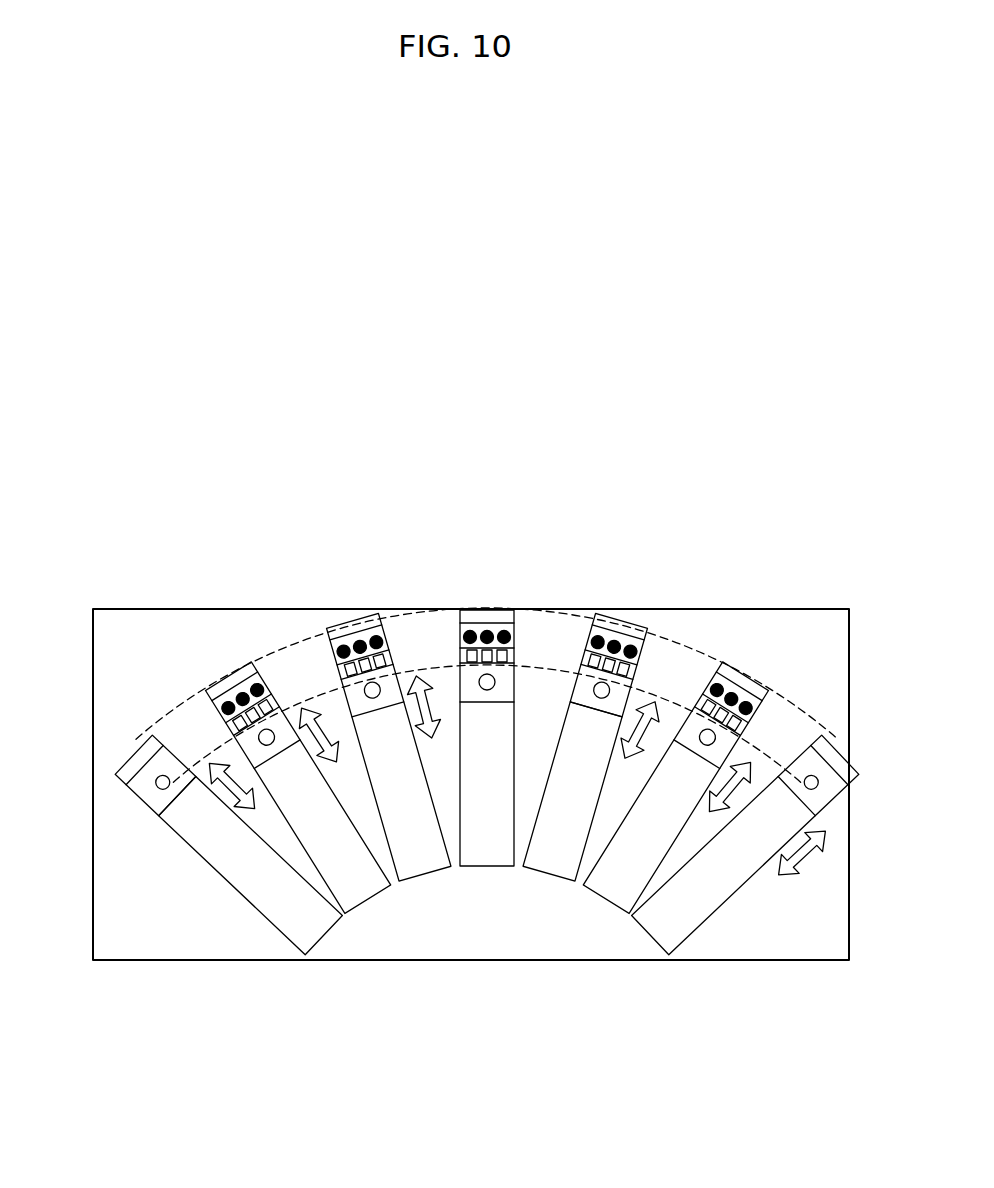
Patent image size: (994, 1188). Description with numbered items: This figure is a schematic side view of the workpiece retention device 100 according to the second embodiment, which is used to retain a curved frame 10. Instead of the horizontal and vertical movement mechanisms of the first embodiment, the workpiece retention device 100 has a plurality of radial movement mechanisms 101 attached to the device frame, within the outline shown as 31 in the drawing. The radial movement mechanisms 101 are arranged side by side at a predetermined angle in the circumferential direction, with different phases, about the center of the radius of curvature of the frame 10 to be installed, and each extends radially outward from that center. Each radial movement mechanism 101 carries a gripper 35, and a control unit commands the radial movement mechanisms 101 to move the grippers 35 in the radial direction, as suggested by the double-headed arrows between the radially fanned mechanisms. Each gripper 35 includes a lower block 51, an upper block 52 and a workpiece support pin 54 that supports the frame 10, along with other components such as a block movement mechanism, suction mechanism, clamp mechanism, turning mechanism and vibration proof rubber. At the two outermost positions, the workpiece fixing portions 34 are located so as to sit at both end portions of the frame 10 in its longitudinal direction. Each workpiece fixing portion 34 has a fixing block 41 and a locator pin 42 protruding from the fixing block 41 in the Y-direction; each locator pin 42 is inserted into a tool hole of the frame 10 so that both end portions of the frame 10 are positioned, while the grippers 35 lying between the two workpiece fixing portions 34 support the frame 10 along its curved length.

The workpiece retention device 100 is at (810, 500).
The housing 31 is at (119, 608).
The frame 10 is at (687, 632).
The gripper 35 is at (750, 745).
The radial movement mechanism 101 is at (372, 900).
The fixing block 41 is at (143, 802).
The workpiece fixing portion 34 is at (141, 759).
The locator pin 42 is at (155, 782).
The workpiece support pin 54 is at (577, 692).
The upper block 52 is at (612, 633).
The lower block 51 is at (637, 688).